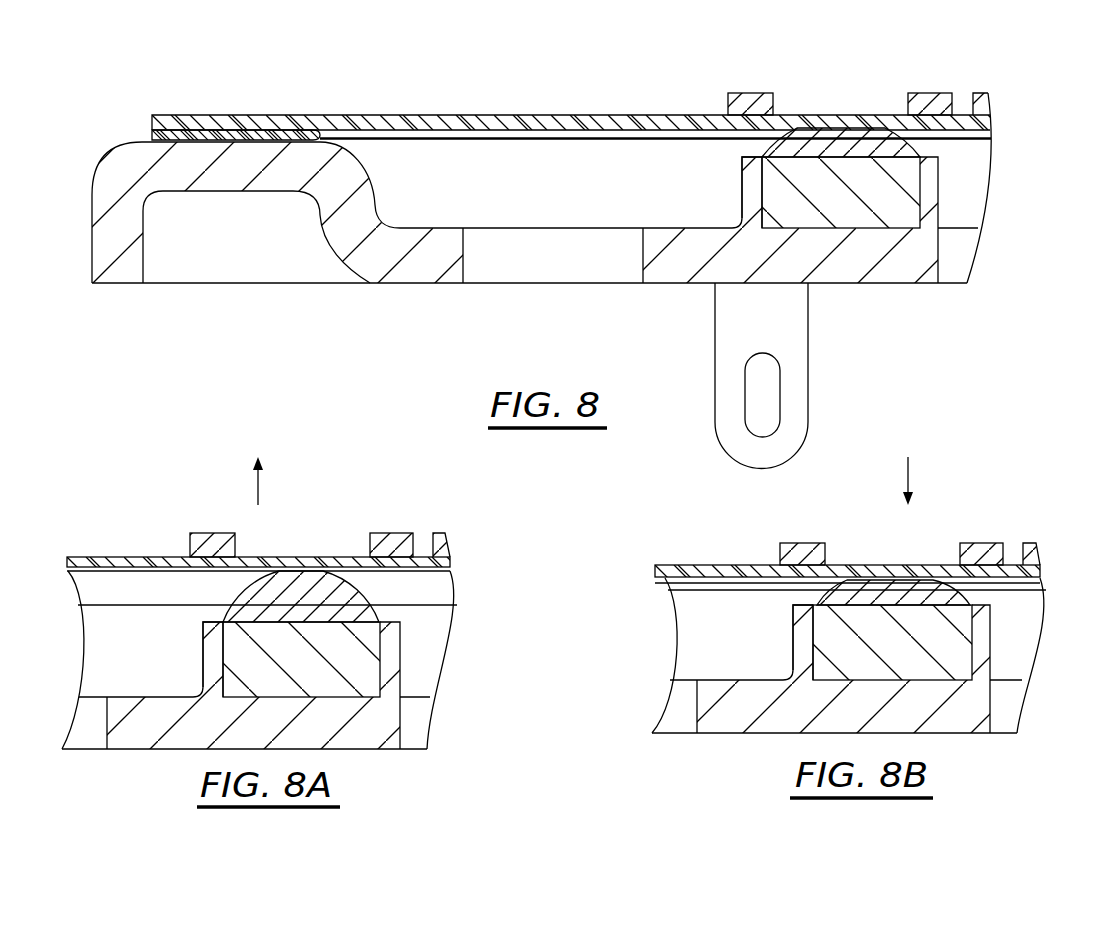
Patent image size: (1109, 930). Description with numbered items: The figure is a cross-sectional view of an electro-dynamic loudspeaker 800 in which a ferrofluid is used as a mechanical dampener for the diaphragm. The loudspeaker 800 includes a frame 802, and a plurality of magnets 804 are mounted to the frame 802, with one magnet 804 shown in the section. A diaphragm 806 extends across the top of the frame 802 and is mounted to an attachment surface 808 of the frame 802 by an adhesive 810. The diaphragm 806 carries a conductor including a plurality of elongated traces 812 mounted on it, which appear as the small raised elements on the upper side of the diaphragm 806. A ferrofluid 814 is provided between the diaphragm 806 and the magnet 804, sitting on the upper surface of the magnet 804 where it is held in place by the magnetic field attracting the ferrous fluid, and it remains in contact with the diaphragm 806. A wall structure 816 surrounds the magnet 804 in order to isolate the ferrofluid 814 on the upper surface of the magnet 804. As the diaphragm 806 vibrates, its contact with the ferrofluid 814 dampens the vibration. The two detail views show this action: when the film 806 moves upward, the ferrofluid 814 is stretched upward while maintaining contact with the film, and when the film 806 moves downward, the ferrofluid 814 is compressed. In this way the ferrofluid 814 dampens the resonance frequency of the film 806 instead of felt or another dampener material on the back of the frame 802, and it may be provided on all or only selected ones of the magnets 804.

In FIG. 8, the electro-dynamic loudspeaker 800 is at (852, 60).
In FIG. 8, the frame 802 is at (350, 243).
In FIG. 8A, the frame 802 is at (195, 727).
In FIG. 8B, the frame 802 is at (742, 708).
In FIG. 8, the magnet 804 is at (900, 188).
In FIG. 8A, the magnet 804 is at (360, 657).
In FIG. 8B, the magnet 804 is at (950, 643).
In FIG. 8, the diaphragm 806 is at (355, 120).
In FIG. 8A, the diaphragm 806 is at (100, 557).
In FIG. 8B, the diaphragm 806 is at (707, 565).
In FIG. 8, the attachment surface 808 is at (117, 140).
In FIG. 8, the adhesive 810 is at (222, 137).
In FIG. 8, the elongated traces 812 is at (743, 100).
In FIG. 8, the ferrofluid 814 is at (817, 142).
In FIG. 8A, the ferrofluid 814 is at (310, 597).
In FIG. 8B, the ferrofluid 814 is at (890, 590).
In FIG. 8, the wall structure 816 is at (753, 185).
In FIG. 8A, the wall structure 816 is at (213, 648).
In FIG. 8B, the wall structure 816 is at (805, 632).